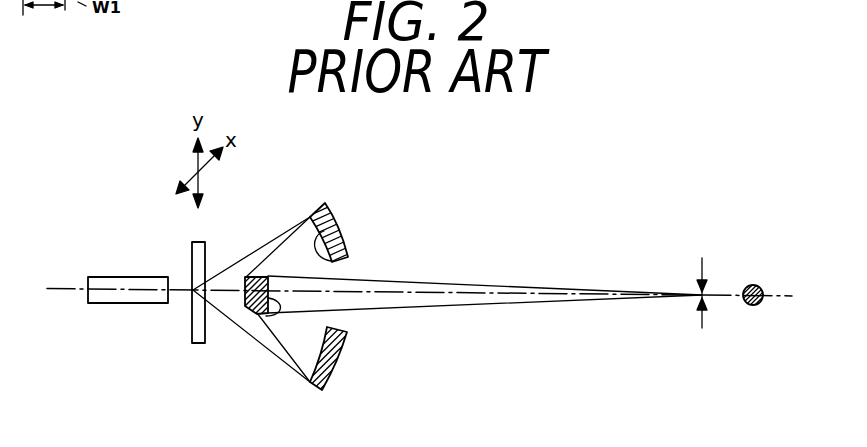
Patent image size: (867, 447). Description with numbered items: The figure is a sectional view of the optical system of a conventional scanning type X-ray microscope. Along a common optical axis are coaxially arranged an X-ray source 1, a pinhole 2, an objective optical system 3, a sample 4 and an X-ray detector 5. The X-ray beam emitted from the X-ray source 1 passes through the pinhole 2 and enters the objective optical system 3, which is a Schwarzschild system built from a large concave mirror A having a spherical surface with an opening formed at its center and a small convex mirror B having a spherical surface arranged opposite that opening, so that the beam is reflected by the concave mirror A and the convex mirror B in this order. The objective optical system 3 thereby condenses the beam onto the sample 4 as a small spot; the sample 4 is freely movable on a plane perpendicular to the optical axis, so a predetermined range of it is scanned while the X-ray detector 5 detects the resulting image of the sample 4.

The X-ray source 1 is at (751, 285).
The pinhole 2 is at (705, 293).
The objective optical system 3 is at (346, 282).
The sample 4 is at (197, 345).
The X-ray detector 5 is at (106, 276).
The concave mirror A is at (351, 241).
The convex mirror B is at (273, 305).